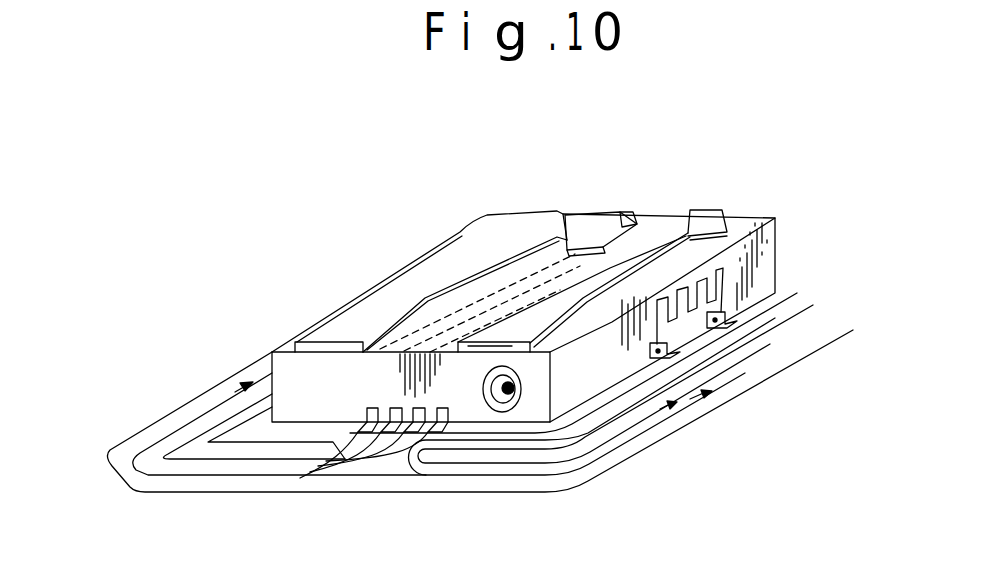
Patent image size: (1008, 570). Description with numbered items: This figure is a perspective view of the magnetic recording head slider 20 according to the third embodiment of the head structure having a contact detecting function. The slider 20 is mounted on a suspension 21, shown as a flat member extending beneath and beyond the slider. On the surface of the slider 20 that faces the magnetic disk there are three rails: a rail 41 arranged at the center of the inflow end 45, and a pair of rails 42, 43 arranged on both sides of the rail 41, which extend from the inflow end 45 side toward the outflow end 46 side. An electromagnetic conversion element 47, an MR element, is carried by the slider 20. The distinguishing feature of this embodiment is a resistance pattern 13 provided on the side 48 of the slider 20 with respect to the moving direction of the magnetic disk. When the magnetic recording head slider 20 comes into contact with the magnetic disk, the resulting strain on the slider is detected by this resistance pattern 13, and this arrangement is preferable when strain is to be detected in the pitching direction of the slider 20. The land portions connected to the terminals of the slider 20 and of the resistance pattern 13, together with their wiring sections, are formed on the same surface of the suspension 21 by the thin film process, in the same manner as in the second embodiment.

The magnetic recording head slider 20 is at (797, 238).
The suspension 21 is at (760, 390).
The resistance pattern 13 is at (693, 328).
The rail 41 is at (620, 222).
The rail 42 is at (473, 240).
The rail 43 is at (695, 228).
The inflow end 45 is at (578, 213).
The outflow end 46 is at (303, 393).
The electromagnetic conversion element 47 is at (500, 352).
The side 48 is at (762, 278).